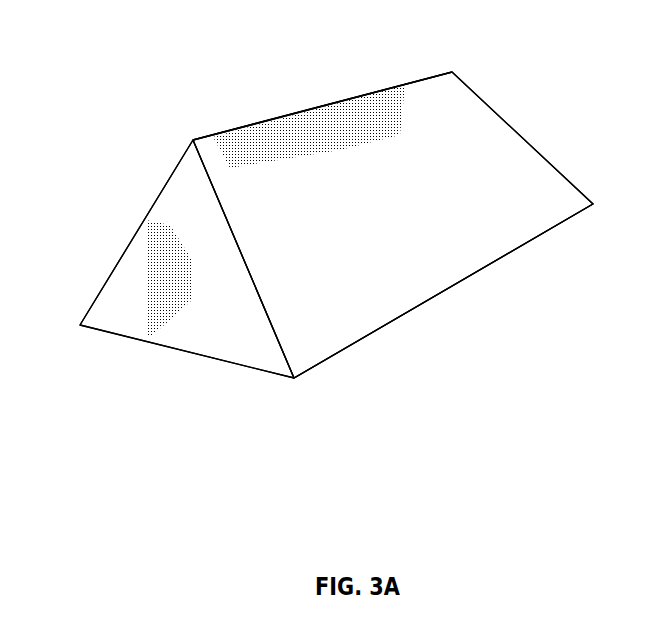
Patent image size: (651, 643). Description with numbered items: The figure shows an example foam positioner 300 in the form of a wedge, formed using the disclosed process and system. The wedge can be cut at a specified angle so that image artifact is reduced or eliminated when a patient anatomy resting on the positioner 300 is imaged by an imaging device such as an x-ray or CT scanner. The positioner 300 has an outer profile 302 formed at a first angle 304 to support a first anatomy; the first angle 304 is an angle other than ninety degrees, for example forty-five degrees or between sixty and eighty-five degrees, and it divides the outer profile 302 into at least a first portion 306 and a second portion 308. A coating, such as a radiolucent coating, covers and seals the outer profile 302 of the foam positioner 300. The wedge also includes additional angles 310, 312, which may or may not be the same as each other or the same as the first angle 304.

The foam positioner 300 is at (505, 135).
The outer profile 302 is at (420, 277).
The first angle 304 is at (325, 105).
The first portion 306 is at (420, 210).
The second portion 308 is at (224, 133).
The additional angle 310 is at (293, 380).
The additional angle 312 is at (82, 328).